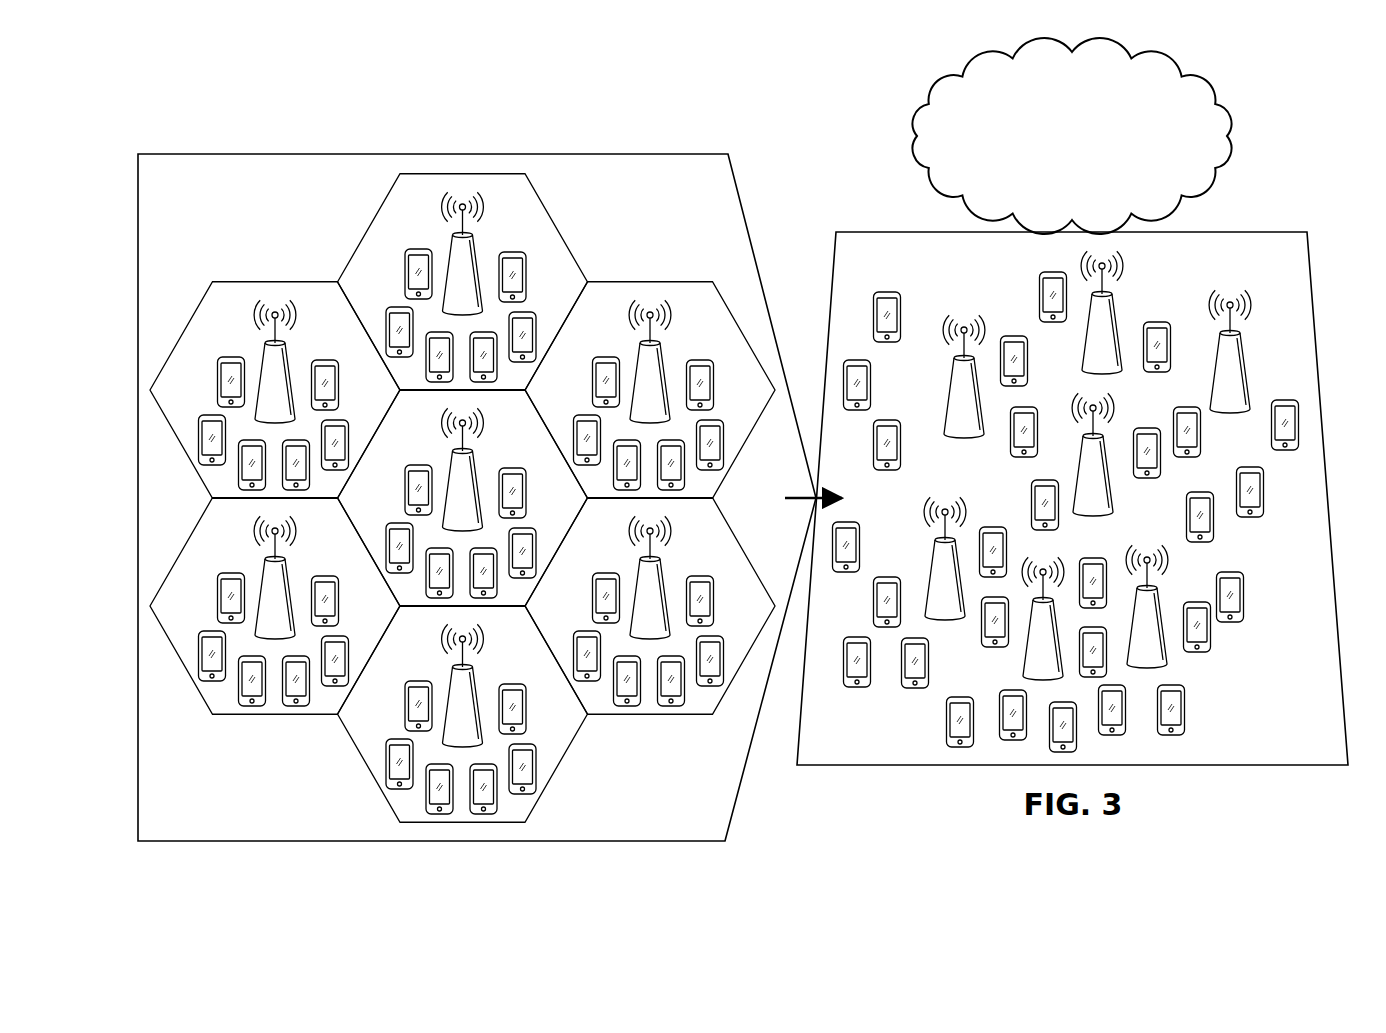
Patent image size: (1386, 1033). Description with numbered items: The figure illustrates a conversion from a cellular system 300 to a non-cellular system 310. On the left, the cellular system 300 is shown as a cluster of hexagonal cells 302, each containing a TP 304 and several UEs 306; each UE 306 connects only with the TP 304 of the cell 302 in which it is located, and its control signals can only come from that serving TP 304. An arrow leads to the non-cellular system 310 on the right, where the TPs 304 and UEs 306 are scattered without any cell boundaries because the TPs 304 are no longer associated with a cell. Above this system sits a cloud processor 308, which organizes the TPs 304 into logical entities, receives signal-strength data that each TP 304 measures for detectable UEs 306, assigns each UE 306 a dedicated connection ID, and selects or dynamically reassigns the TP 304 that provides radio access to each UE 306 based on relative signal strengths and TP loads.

The cellular system 300 is at (274, 87).
The cell 302 is at (247, 281).
The TP 304 is at (287, 353).
The UE 306 is at (231, 357).
The cloud processor 308 is at (1055, 167).
The non-cellular system 310 is at (1280, 86).